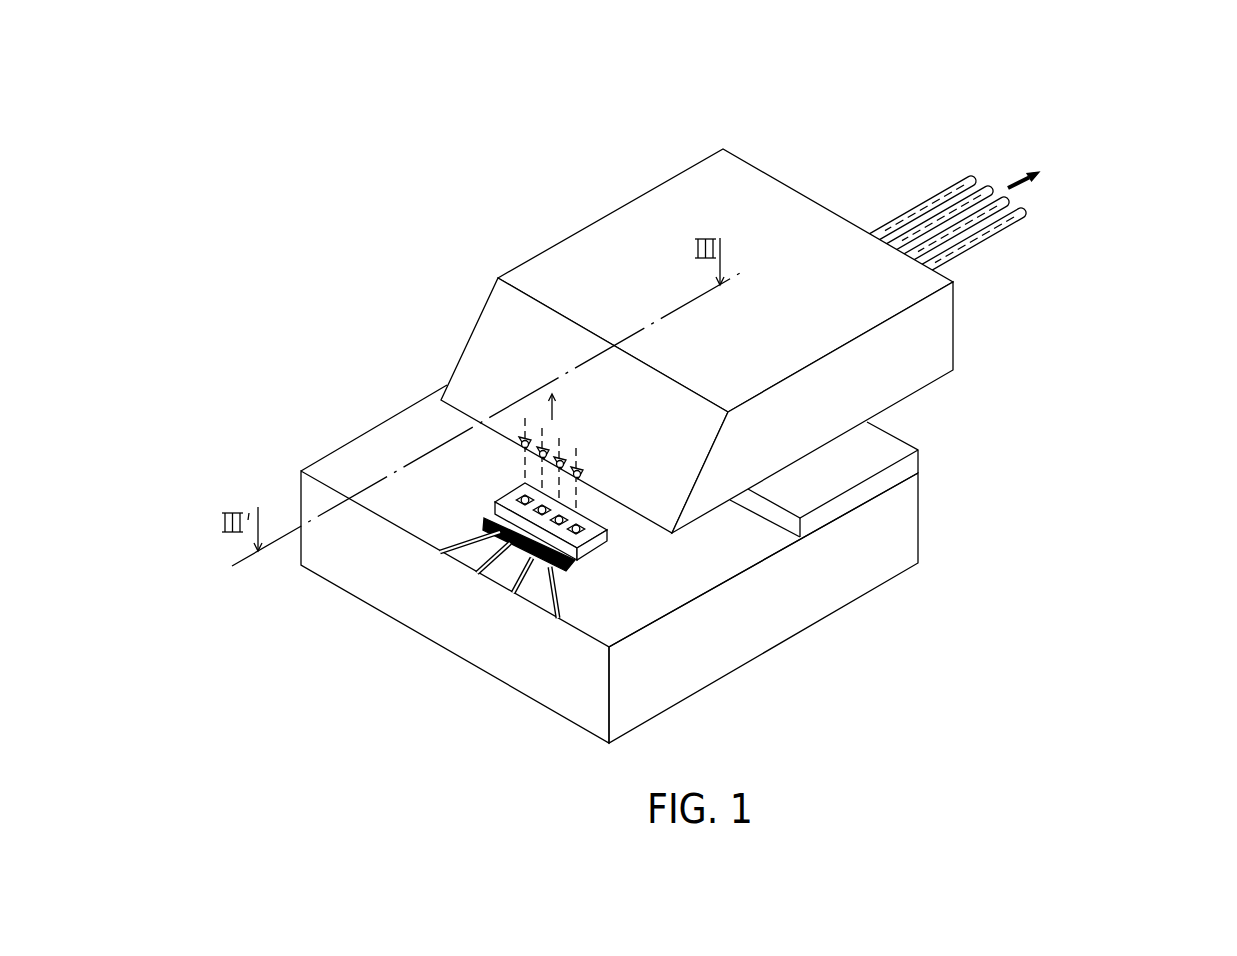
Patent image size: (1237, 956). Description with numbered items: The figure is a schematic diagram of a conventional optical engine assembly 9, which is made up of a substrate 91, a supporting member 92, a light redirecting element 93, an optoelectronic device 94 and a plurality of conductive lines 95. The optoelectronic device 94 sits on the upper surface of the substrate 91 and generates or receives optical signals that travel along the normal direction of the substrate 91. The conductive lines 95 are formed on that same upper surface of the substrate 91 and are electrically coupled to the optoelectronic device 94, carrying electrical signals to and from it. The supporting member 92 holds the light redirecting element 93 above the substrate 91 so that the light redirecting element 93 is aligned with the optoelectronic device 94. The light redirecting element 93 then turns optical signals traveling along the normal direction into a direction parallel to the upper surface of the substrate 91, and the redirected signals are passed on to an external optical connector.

The optical engine assembly 9 is at (703, 421).
The substrate 91 is at (918, 520).
The supporting member 92 is at (918, 456).
The light redirecting element 93 is at (920, 378).
The optoelectronic device 94 is at (597, 546).
The conductive lines 95 is at (550, 577).